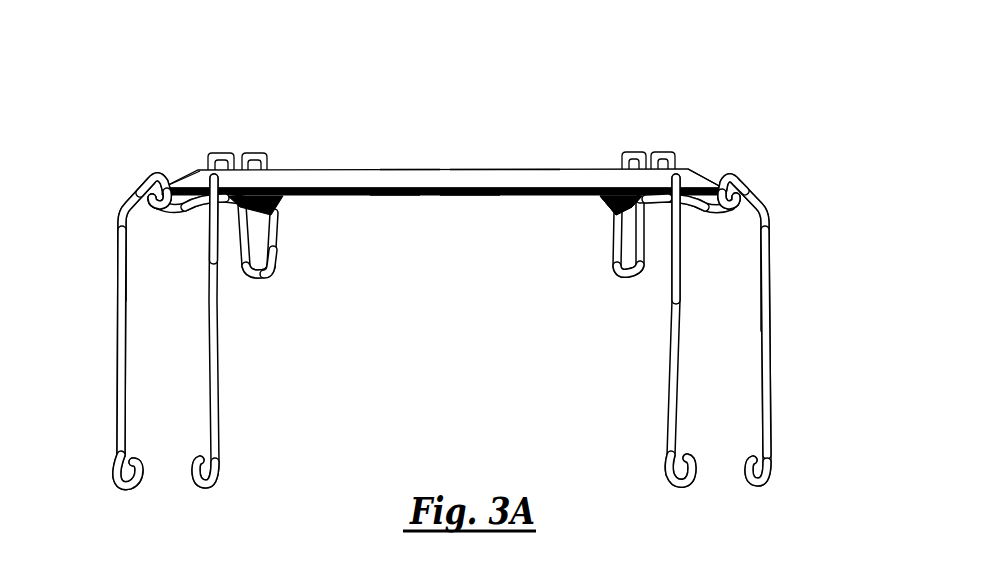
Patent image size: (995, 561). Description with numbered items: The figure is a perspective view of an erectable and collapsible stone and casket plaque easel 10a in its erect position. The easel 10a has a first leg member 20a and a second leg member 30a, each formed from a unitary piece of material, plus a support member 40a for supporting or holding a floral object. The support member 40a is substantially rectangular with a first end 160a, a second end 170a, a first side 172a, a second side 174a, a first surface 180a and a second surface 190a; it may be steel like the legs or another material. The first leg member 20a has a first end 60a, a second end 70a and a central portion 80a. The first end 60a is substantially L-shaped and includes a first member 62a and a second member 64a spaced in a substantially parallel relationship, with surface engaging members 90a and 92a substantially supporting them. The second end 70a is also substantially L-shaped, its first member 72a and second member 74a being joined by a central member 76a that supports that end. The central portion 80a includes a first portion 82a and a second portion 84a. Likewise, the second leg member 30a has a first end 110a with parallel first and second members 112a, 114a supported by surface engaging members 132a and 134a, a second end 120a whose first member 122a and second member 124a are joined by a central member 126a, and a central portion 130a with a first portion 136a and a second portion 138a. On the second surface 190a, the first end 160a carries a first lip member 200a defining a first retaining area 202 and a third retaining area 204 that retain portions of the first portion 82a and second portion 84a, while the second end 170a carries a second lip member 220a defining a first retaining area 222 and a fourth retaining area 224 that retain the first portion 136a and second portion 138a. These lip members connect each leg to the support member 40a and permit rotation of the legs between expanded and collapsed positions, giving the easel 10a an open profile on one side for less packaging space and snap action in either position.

The stone and casket plaque easel 10a is at (507, 92).
The first leg member 20a is at (125, 168).
The second leg member 30a is at (750, 166).
The support member 40a is at (316, 171).
The first end of first leg member 60a is at (118, 218).
The first member of first end 62a is at (118, 318).
The second member of first end 64a is at (221, 341).
The second end of first leg member 70a is at (220, 152).
The first member of second end 72a is at (260, 276).
The second member of second end 74a is at (274, 233).
The central member of second end 76a is at (279, 274).
The central portion of first leg member 80a is at (173, 172).
The first portion of central portion 82a is at (168, 206).
The second portion of central portion 84a is at (228, 208).
The surface engaging member 90a is at (116, 486).
The surface engaging member 92a is at (204, 489).
The first end of second leg member 110a is at (768, 215).
The first member of first end 112a is at (663, 391).
The second member of first end 114a is at (772, 343).
The second end of second leg member 120a is at (665, 151).
The first member of second end 122a is at (615, 235).
The second member of second end 124a is at (648, 252).
The central member of second end 126a is at (607, 276).
The central portion of second leg member 130a is at (708, 170).
The surface engaging member 132a is at (684, 488).
The surface engaging member 134a is at (764, 486).
The first portion of central portion 136a is at (615, 203).
The second portion of central portion 138a is at (712, 214).
The first end of support member 160a is at (188, 168).
The second end of support member 170a is at (685, 168).
The first side of support member 172a is at (381, 196).
The second side of support member 174a is at (502, 168).
The first surface of support member 180a is at (402, 168).
The second surface of support member 190a is at (468, 194).
The first lip member 200a is at (281, 205).
The first retaining area 202 is at (151, 203).
The third retaining area 204 is at (199, 212).
The second lip member 220a is at (603, 196).
The first retaining area 222 is at (735, 198).
The fourth retaining area 224 is at (688, 208).